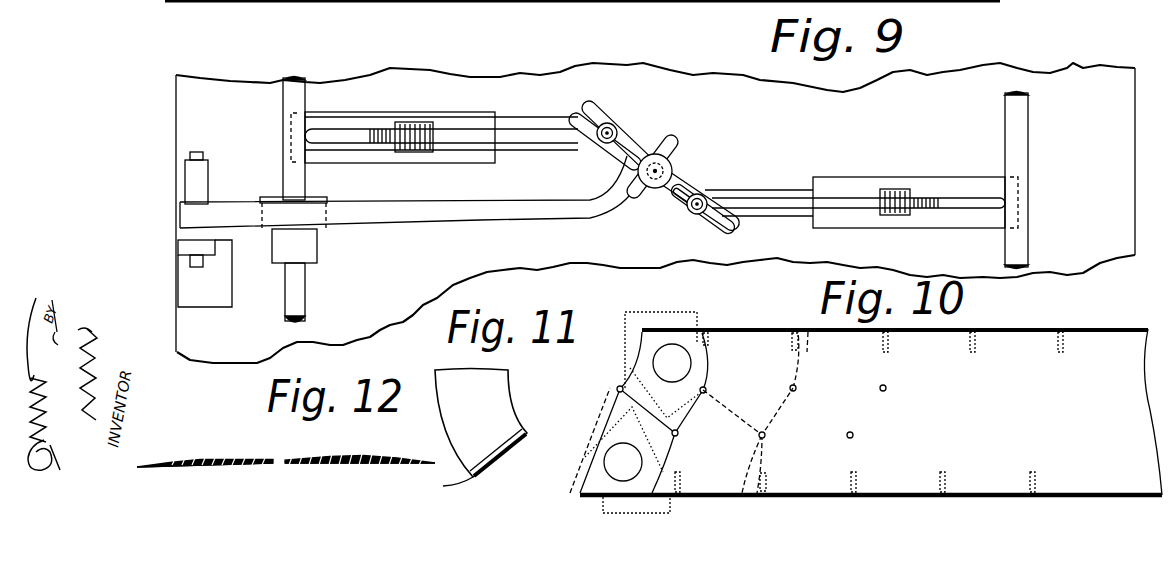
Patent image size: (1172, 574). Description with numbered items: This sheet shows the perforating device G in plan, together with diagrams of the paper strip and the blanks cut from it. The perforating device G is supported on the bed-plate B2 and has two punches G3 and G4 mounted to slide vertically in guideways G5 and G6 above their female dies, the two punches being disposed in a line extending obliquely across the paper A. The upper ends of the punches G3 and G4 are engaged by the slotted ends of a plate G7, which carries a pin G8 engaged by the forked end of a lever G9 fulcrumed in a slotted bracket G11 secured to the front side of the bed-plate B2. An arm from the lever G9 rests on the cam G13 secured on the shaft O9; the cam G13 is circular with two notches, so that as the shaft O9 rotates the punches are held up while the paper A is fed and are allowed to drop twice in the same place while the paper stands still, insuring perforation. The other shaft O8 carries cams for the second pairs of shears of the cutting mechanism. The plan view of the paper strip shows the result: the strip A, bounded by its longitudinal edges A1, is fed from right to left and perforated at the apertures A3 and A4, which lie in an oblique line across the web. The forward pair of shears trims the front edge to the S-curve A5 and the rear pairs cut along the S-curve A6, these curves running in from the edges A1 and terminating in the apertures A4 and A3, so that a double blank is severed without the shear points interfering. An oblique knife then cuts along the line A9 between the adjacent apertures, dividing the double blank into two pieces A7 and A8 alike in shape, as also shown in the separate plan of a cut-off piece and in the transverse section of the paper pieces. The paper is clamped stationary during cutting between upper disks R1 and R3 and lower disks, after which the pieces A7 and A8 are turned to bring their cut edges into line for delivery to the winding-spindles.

In FIG. 9, the bed-plate B2 is at (655, 213).
In FIG. 9, the perforating device G is at (675, 166).
In FIG. 9, the punch G3 is at (610, 125).
In FIG. 9, the punch G4 is at (692, 218).
In FIG. 9, the guideway G5 is at (565, 136).
In FIG. 9, the guideway G6 is at (733, 192).
In FIG. 9, the plate G7 is at (640, 145).
In FIG. 9, the pin G8 is at (656, 188).
In FIG. 9, the lever G9 is at (572, 212).
In FIG. 9, the slotted bracket G11 is at (185, 250).
In FIG. 9, the cam G13 is at (328, 230).
In FIG. 9, the shaft O8 is at (1023, 129).
In FIG. 9, the shaft O9 is at (280, 323).
In FIG. 10, the paper strip or web A is at (918, 412).
In FIG. 10, the rail / guide edge A1 is at (1127, 325).
In FIG. 11, the rail / guide edge A1 is at (443, 486).
In FIG. 12, the rail / guide edge A1 is at (427, 473).
In FIG. 10, the aperture A3 is at (679, 436).
In FIG. 10, the aperture A4 is at (617, 389).
In FIG. 10, the S-curve A5 is at (617, 388).
In FIG. 10, the S-curve A6 is at (622, 358).
In FIG. 10, the paper piece or blank A7 is at (587, 477).
In FIG. 11, the paper piece or blank A7 is at (481, 423).
In FIG. 12, the paper piece or blank A7 is at (234, 450).
In FIG. 10, the paper piece or blank A8 is at (693, 340).
In FIG. 12, the paper piece or blank A8 is at (360, 448).
In FIG. 10, the oblique cutting line A9 is at (612, 394).
In FIG. 10, the disk R1 is at (623, 467).
In FIG. 10, the disk R3 is at (672, 363).